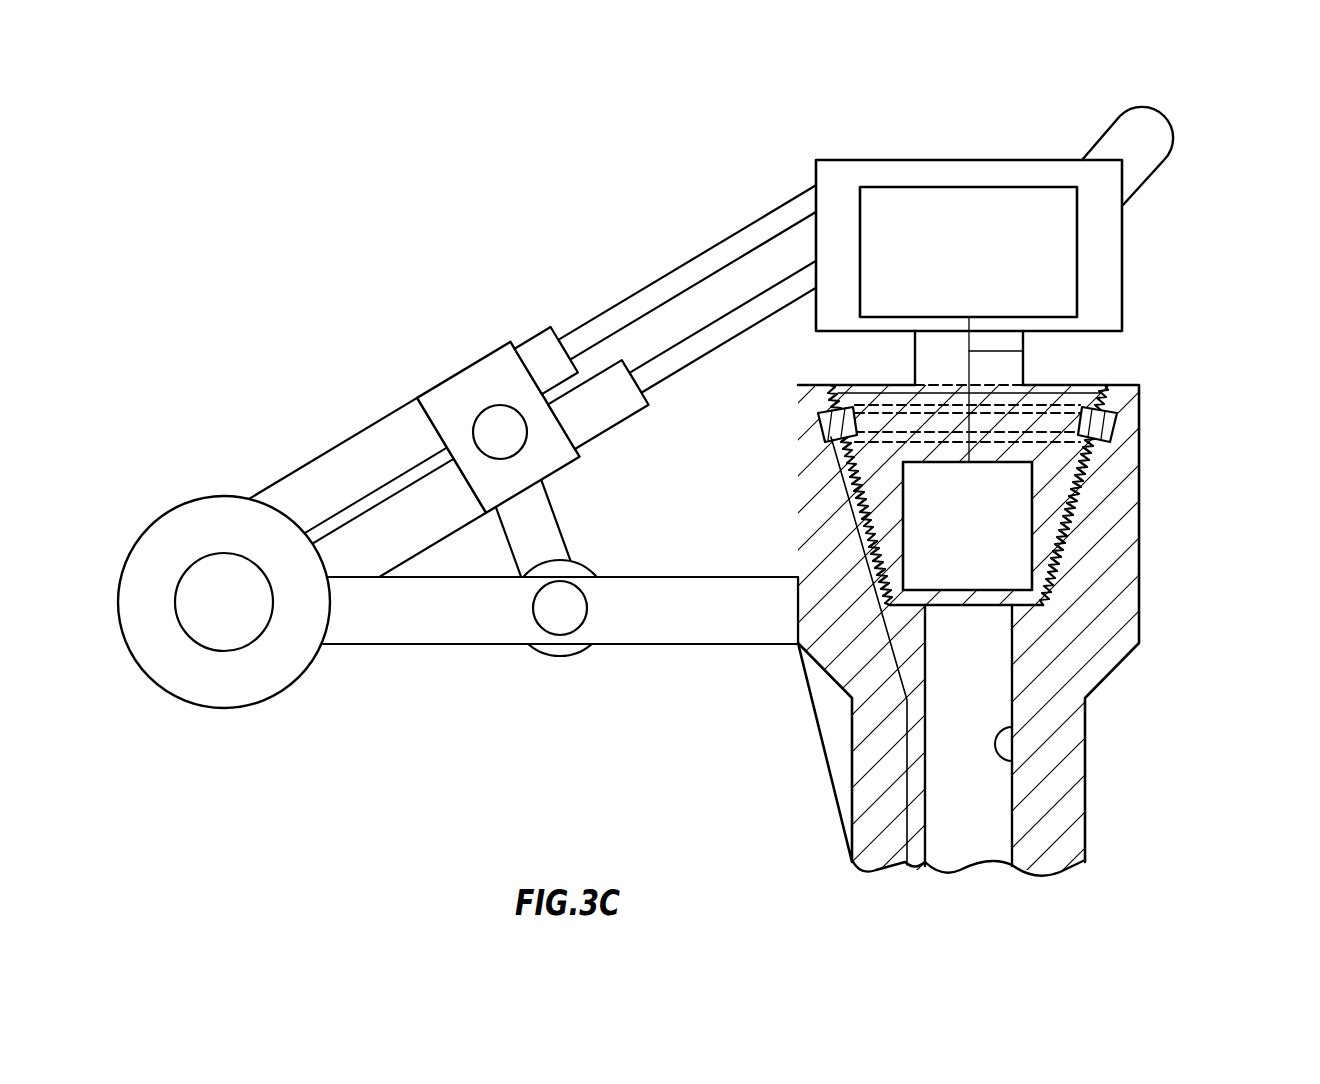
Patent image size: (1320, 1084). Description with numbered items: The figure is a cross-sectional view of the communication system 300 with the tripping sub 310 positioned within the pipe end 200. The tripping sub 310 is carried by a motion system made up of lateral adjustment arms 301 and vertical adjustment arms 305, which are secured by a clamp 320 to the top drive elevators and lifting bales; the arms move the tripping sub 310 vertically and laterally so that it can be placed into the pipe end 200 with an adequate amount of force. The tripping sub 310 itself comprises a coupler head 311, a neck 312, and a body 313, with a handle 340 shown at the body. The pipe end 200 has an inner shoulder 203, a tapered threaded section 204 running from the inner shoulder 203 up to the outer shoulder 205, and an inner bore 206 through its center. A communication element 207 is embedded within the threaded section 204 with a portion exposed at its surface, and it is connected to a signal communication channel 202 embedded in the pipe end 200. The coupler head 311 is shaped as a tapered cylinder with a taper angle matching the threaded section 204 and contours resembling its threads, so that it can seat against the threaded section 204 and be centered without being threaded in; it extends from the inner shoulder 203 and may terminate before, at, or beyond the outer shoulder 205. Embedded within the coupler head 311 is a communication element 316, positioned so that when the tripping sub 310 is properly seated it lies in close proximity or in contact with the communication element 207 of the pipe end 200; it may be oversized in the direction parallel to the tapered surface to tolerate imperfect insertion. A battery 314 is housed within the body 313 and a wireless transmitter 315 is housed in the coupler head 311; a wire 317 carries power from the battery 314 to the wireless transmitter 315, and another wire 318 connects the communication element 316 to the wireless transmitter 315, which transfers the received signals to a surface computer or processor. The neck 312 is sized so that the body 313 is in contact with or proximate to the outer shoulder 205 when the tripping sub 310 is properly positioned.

The communication system 300 is at (296, 208).
The lateral adjustment arms 301 is at (336, 525).
The vertical adjustment arms 305 is at (528, 540).
The tripping sub 310 is at (1056, 272).
The coupler head 311 is at (1060, 512).
The neck 312 is at (1025, 365).
The body 313 is at (1124, 243).
The battery 314 is at (1062, 232).
The wireless transmitter 315 is at (1020, 490).
The communication element 316 is at (1112, 404).
The wire 317 is at (1025, 352).
The wire 318 is at (862, 515).
The clamp 320 is at (785, 632).
The handle 340 is at (1168, 120).
The pipe end 200 is at (807, 621).
The signal communication channel 202 is at (900, 788).
The inner shoulder 203 is at (1022, 608).
The threaded section 204 is at (1100, 538).
The outer shoulder 205 is at (1125, 386).
The inner bore 206 is at (1012, 762).
The communication element 207 is at (1115, 436).